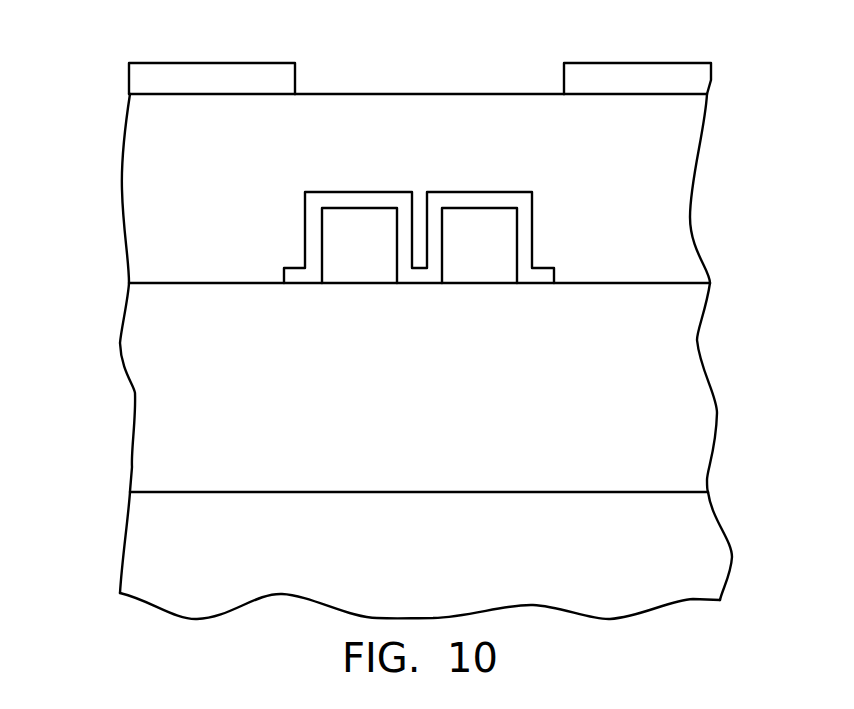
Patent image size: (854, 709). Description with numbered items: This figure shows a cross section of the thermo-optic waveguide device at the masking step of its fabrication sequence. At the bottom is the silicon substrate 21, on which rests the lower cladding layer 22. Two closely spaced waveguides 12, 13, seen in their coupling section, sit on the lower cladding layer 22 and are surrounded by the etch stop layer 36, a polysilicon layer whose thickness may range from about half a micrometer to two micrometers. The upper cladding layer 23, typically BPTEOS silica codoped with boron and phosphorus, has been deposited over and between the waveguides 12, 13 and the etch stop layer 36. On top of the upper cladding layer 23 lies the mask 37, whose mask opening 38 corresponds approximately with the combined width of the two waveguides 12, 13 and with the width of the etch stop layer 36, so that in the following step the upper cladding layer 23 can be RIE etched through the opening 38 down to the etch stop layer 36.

The mask 37 is at (216, 70).
The mask opening 38 is at (437, 68).
The etch stop layer 36 is at (392, 198).
The waveguide 12 is at (375, 272).
The waveguide 13 is at (487, 272).
The upper cladding layer 23 is at (145, 193).
The lower cladding layer 22 is at (162, 378).
The silicon substrate 21 is at (145, 583).